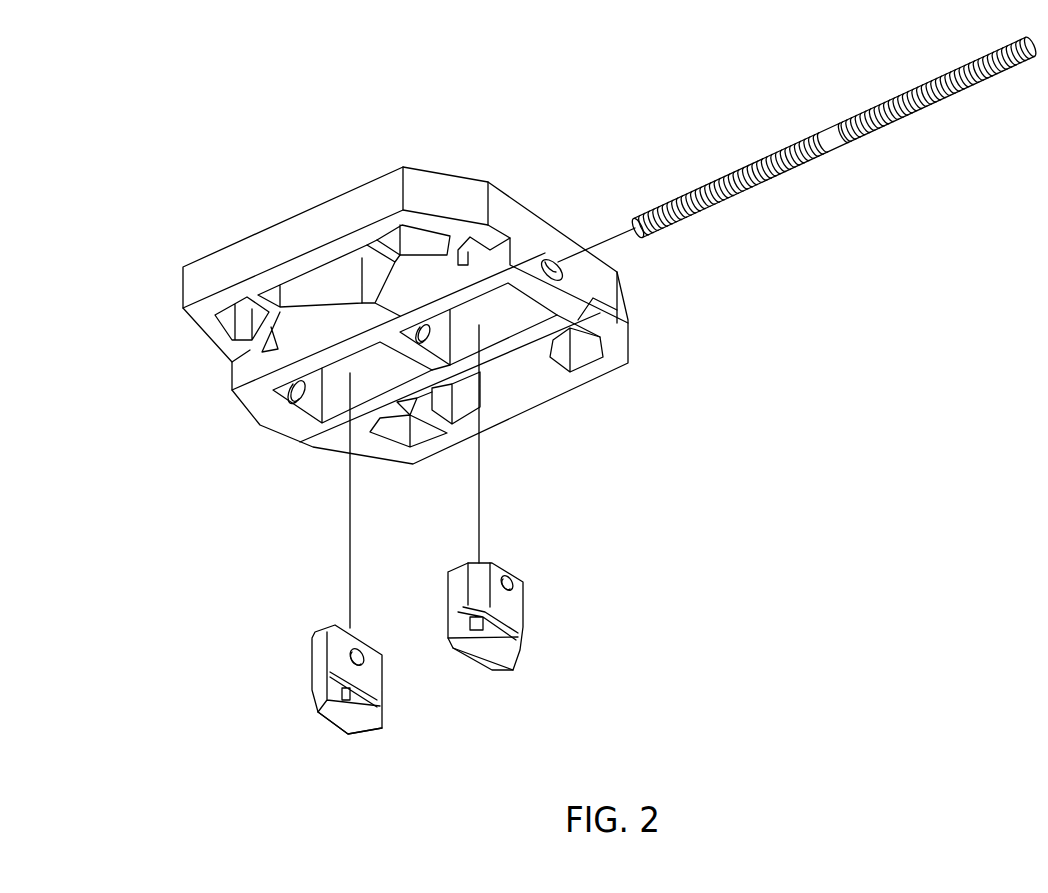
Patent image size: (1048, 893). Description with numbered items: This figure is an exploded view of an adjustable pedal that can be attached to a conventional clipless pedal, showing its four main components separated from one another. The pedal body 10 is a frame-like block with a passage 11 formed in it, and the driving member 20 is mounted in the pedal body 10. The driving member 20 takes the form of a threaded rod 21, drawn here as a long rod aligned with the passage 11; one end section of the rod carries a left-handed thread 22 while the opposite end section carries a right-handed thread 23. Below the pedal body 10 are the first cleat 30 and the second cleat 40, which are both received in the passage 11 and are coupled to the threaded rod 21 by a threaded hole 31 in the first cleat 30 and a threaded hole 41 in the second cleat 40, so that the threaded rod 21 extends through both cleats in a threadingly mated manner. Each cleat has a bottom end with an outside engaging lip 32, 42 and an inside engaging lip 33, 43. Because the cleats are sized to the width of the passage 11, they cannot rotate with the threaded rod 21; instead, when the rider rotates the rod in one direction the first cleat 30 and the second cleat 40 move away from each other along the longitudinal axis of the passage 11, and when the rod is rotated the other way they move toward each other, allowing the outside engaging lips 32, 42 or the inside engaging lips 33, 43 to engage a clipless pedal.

The pedal body 10 is at (327, 221).
The passage 11 is at (335, 373).
The driving member 20 is at (834, 146).
The threaded rod 21 is at (831, 138).
The left-handed thread 22 is at (1028, 48).
The right-handed thread 23 is at (831, 138).
The first cleat 30 is at (329, 678).
The threaded hole 31 is at (360, 652).
The outside engaging lip 32 is at (322, 712).
The inside engaging lip 33 is at (380, 712).
The second cleat 40 is at (530, 631).
The threaded hole 41 is at (510, 580).
The outside engaging lip 42 is at (515, 648).
The inside engaging lip 43 is at (480, 670).